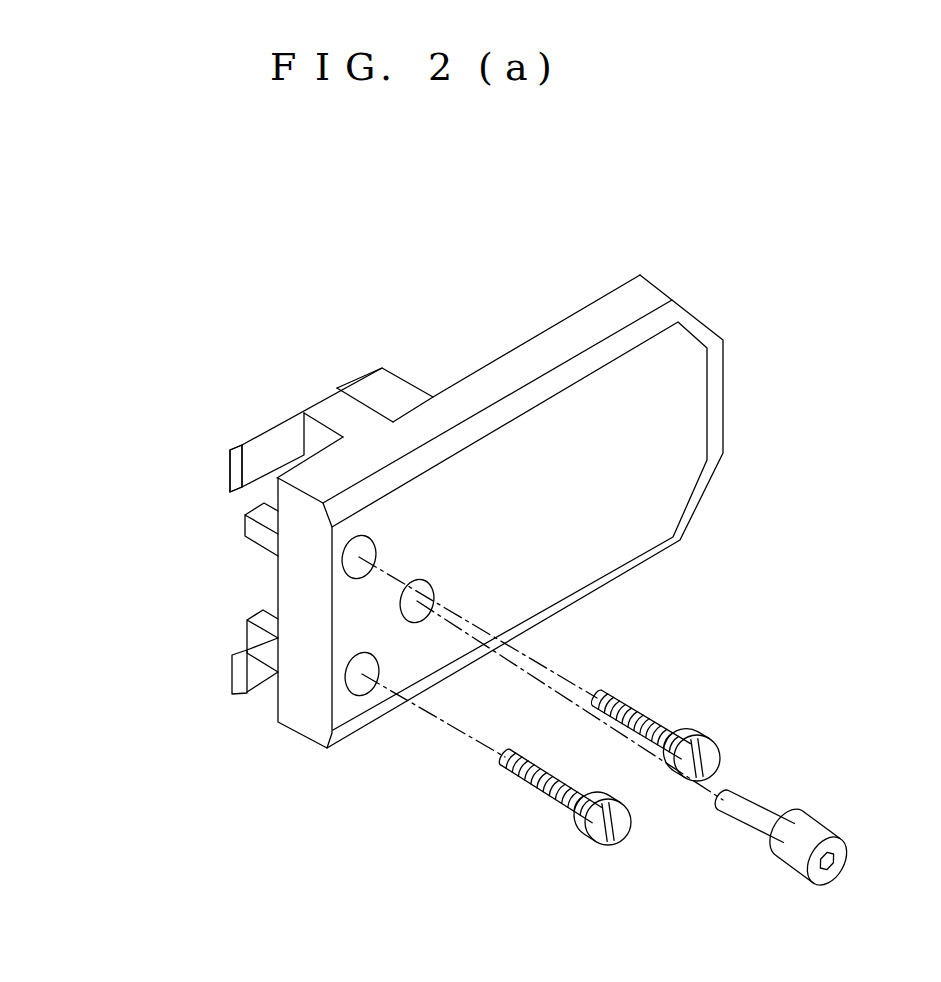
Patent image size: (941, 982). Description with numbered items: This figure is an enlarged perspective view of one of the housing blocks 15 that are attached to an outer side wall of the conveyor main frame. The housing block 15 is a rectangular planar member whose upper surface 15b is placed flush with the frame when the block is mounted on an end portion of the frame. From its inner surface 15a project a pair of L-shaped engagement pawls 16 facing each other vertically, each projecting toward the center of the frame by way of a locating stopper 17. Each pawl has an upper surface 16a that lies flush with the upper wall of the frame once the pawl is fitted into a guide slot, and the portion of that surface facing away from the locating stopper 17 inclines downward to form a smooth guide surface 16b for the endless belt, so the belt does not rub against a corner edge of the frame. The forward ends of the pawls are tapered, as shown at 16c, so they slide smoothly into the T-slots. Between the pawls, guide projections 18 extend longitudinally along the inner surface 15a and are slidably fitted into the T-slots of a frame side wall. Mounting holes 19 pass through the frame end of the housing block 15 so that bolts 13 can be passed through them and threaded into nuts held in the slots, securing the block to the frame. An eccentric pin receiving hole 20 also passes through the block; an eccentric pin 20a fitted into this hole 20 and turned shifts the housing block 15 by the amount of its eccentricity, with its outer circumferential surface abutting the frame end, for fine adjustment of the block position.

The bolt 13 is at (607, 698).
The housing block 15 is at (638, 575).
The inner surface 15a is at (275, 707).
The upper surface 15b is at (580, 327).
The L-shaped engagement pawl 16 is at (308, 380).
The upper surface 16a is at (343, 422).
The guide surface 16b is at (403, 394).
The tapered forward end 16c is at (232, 470).
The locating stopper 17 is at (273, 462).
The guide projection 18 is at (255, 640).
The mounting hole 19 is at (363, 558).
The eccentric pin receiving hole 20 is at (416, 603).
The eccentric pin 20a is at (813, 842).